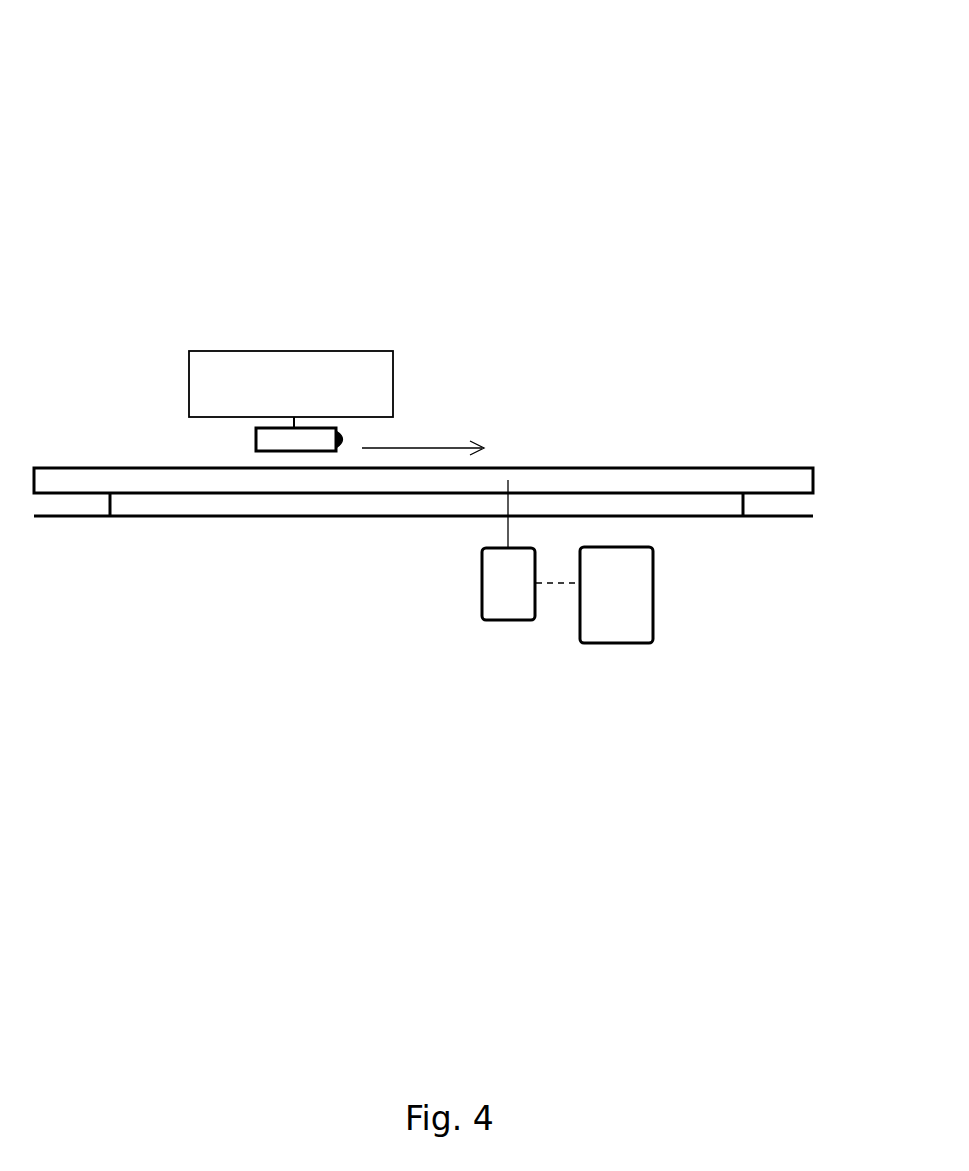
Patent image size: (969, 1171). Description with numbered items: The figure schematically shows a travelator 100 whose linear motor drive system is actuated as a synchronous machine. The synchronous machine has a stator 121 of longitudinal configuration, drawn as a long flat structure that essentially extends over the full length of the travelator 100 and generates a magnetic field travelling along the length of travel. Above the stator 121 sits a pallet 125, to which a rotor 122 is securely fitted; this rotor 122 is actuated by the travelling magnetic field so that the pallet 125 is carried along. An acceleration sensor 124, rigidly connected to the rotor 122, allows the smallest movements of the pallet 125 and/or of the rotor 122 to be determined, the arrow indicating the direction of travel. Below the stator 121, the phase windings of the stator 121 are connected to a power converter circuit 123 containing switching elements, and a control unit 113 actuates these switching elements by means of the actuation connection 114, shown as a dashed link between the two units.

The travelator 100 is at (158, 108).
The control unit 113 is at (640, 612).
The actuation connection 114 is at (555, 590).
The stator 121 is at (570, 467).
The rotor 122 is at (255, 437).
The power converter circuit 123 is at (530, 599).
The acceleration sensor 124 is at (348, 440).
The pallet 125 is at (367, 350).